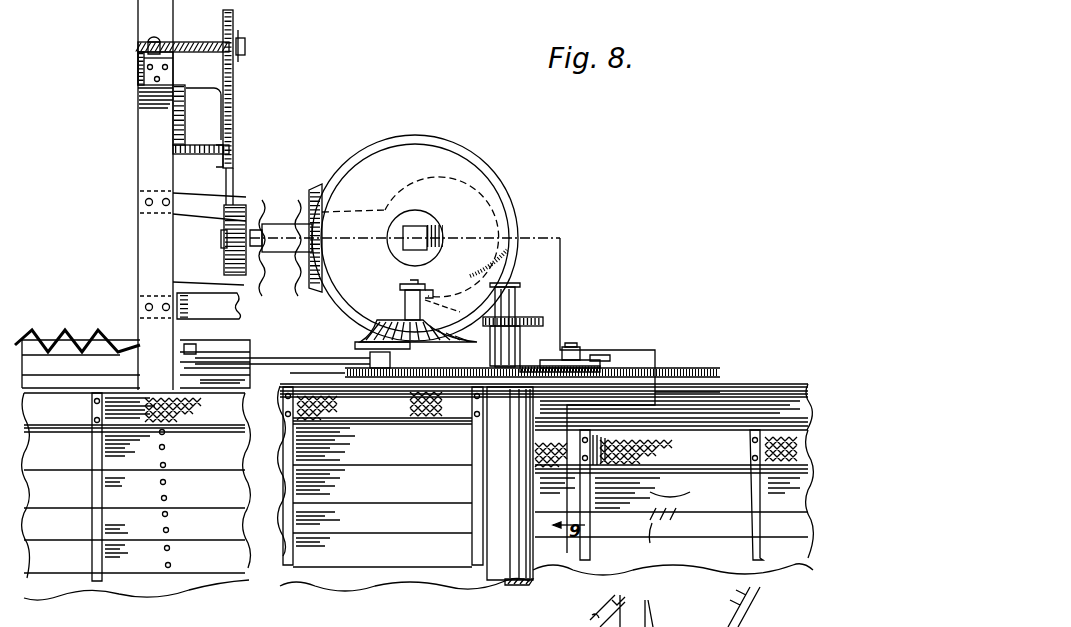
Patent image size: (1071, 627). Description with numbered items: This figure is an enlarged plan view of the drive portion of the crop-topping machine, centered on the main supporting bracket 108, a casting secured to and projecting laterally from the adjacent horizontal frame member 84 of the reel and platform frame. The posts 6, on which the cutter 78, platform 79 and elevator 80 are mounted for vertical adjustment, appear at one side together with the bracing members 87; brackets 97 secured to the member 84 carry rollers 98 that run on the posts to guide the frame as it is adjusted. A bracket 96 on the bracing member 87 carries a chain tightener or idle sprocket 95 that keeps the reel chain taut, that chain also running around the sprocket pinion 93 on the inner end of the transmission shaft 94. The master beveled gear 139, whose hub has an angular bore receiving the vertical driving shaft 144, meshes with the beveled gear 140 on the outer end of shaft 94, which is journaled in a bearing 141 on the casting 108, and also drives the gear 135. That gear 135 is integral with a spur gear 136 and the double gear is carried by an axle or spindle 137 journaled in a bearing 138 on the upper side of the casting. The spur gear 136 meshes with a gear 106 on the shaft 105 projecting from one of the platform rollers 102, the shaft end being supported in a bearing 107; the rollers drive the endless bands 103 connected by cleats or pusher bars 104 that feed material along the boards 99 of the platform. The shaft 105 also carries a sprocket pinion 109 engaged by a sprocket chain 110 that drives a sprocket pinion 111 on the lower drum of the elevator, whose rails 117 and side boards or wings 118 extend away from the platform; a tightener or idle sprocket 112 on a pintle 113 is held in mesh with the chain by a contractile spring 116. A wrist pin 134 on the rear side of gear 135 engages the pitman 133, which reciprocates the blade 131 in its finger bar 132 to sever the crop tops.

The posts 6 is at (178, 142).
The cutter 78 is at (81, 351).
The platform 79 is at (136, 508).
The elevator 80 is at (673, 465).
The horizontal members 84 is at (150, 250).
The bracing members 87 is at (140, 58).
The sprocket pinion 93 is at (224, 243).
The transmission shaft 94 is at (267, 222).
The chain tightener or idle sprocket 95 is at (242, 42).
The bracket 96 is at (192, 43).
The brackets 97 is at (234, 105).
The rollers 98 is at (192, 140).
The boards 99 is at (346, 555).
The rollers 102 is at (502, 579).
The endless bands 103 is at (393, 410).
The cleats or pusher bars 104 is at (476, 491).
The shaft 105 is at (505, 342).
The gear 106 is at (535, 320).
The bearing 107 is at (514, 306).
The main supporting bracket 108 is at (284, 300).
The sprocket pinion 109 is at (565, 363).
The sprocket chain 110 is at (445, 367).
The sprocket pinion 111 is at (350, 376).
The tightener or idle sprocket 112 is at (590, 367).
The pintle 113 is at (578, 348).
The contractile spring 116 is at (650, 388).
The rails 117 is at (715, 516).
The side boards or wings 118 is at (712, 384).
The blade 131 is at (50, 336).
The finger bar 132 is at (212, 334).
The pitman 133 is at (350, 357).
The wrist pin 134 is at (392, 361).
The gear 135 is at (368, 339).
The spur gear 136 is at (405, 301).
The axle or spindle 137 is at (400, 286).
The bearing 138 is at (432, 296).
The master beveled gear 139 is at (484, 175).
The beveled gear 140 is at (312, 186).
The bearing 141 is at (284, 230).
The vertical driving shaft 144 is at (427, 233).